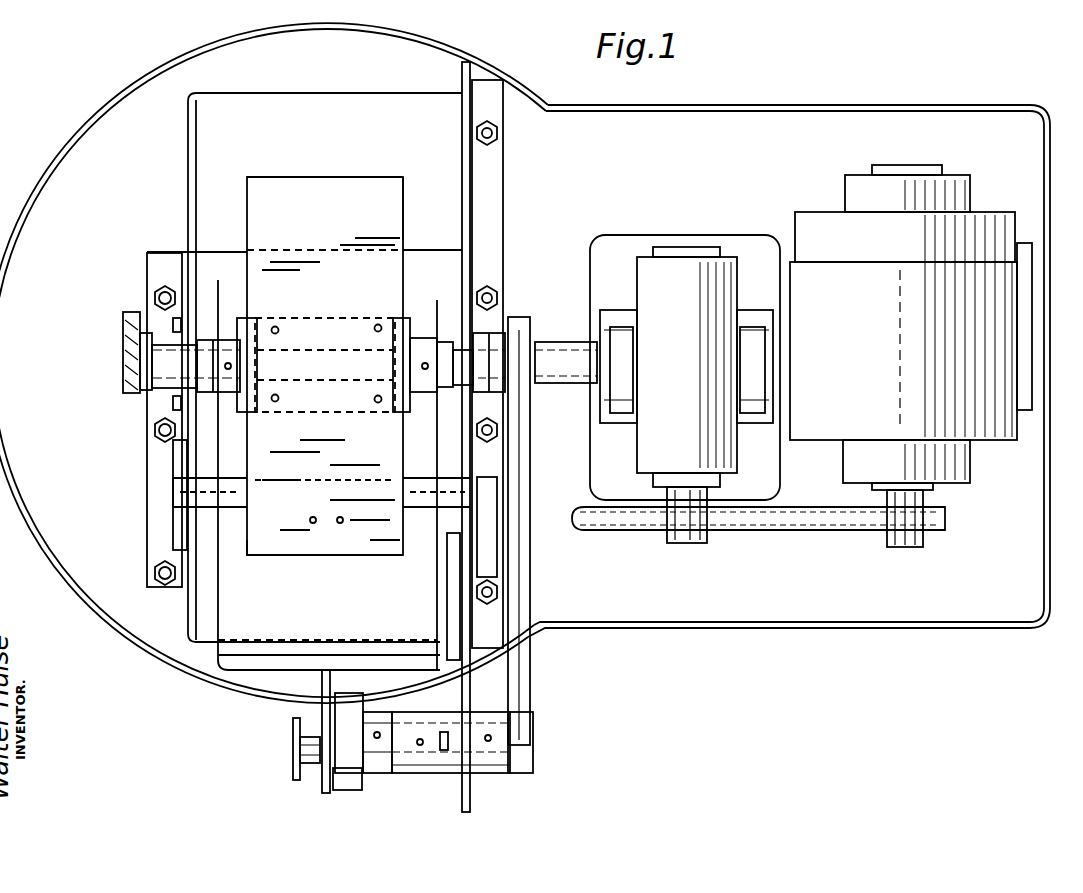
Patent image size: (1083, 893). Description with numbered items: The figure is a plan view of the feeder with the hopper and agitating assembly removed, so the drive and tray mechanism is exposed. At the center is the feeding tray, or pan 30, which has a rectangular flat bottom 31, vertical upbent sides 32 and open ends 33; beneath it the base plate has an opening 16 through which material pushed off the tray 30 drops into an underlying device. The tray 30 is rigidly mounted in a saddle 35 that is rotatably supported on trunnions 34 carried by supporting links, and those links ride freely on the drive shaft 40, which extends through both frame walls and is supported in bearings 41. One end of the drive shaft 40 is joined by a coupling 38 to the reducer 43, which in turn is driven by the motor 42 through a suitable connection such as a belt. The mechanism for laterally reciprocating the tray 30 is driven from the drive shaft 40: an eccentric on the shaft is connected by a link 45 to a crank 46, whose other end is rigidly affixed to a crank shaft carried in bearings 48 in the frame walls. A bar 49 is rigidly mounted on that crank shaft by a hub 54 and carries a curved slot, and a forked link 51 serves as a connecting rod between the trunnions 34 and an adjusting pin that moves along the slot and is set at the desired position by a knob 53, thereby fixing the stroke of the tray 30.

The opening 16 is at (196, 167).
The tray 30 is at (247, 218).
The bottom 31 is at (322, 546).
The sides 32 is at (404, 233).
The ends 33 is at (307, 177).
The trunnions 34 is at (226, 340).
The saddle 35 is at (408, 410).
The coupling 38 is at (580, 383).
The drive shaft 40 is at (422, 348).
The bearings 41 is at (488, 345).
The motor 42 is at (911, 356).
The reducer 43 is at (672, 250).
The link 45 is at (530, 681).
The crank 46 is at (512, 768).
The bearings 48 is at (410, 783).
The bar 49 is at (330, 793).
The forked link 51 is at (218, 606).
The knob 53 is at (293, 755).
The hub 54 is at (350, 790).